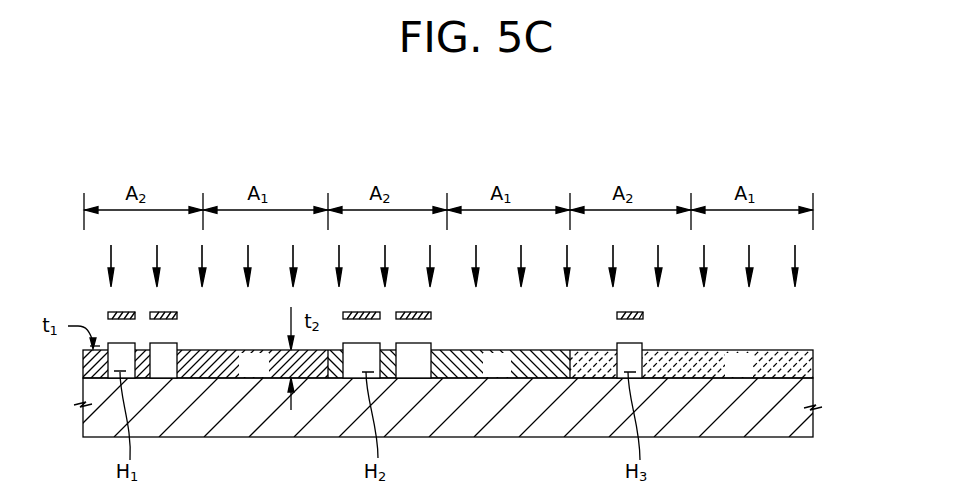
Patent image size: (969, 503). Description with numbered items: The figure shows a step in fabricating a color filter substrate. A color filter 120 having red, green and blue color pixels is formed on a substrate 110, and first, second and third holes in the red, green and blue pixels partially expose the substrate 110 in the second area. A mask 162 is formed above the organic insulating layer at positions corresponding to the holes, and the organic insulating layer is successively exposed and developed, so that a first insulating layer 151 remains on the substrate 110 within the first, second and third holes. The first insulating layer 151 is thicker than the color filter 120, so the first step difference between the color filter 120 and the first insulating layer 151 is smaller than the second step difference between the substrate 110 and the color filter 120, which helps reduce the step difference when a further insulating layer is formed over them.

The substrate 110 is at (742, 415).
The color filter 120 is at (813, 372).
The first insulating layer 151 is at (160, 346).
The mask 162 is at (620, 315).